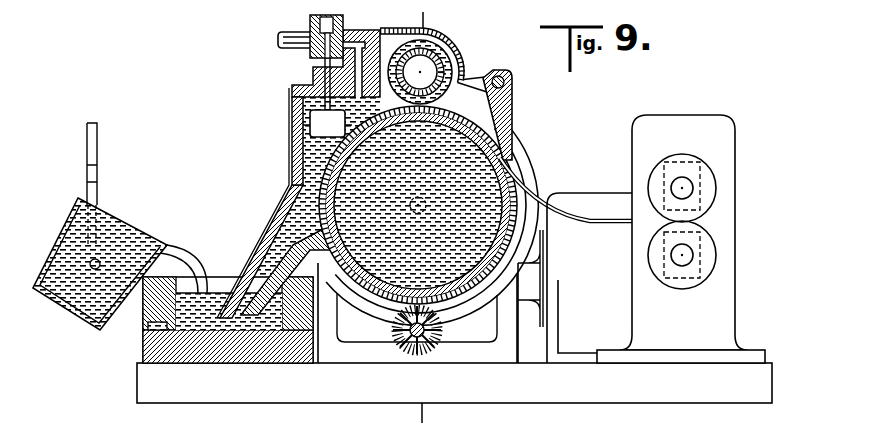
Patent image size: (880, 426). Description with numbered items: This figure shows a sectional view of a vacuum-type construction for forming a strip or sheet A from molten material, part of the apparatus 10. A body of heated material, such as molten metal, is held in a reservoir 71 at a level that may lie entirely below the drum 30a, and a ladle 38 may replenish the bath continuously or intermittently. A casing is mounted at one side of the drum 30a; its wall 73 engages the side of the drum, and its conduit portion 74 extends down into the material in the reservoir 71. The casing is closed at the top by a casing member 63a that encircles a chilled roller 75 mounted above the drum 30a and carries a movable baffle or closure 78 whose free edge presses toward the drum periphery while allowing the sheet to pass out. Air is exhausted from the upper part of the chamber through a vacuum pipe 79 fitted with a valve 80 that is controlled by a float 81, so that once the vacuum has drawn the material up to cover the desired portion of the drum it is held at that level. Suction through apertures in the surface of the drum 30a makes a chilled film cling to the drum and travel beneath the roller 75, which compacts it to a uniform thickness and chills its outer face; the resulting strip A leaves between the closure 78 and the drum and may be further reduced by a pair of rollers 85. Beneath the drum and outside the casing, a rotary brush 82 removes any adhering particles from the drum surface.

The section line / apparatus 10 is at (396, 416).
The drum 30a is at (507, 177).
The ladle 38 is at (58, 304).
The casing member 63a is at (448, 43).
The reservoir 71 is at (143, 350).
The wall 73 is at (417, 313).
The conduit portion 74 is at (262, 247).
The roller 75 is at (462, 62).
The movable baffle or closure 78 is at (510, 100).
The vacuum pipe 79 is at (278, 40).
The valve 80 is at (313, 50).
The float 81 is at (303, 121).
The rotary brush 82 is at (446, 326).
The pair of rollers 85 is at (712, 222).
The strip or sheet A is at (588, 224).